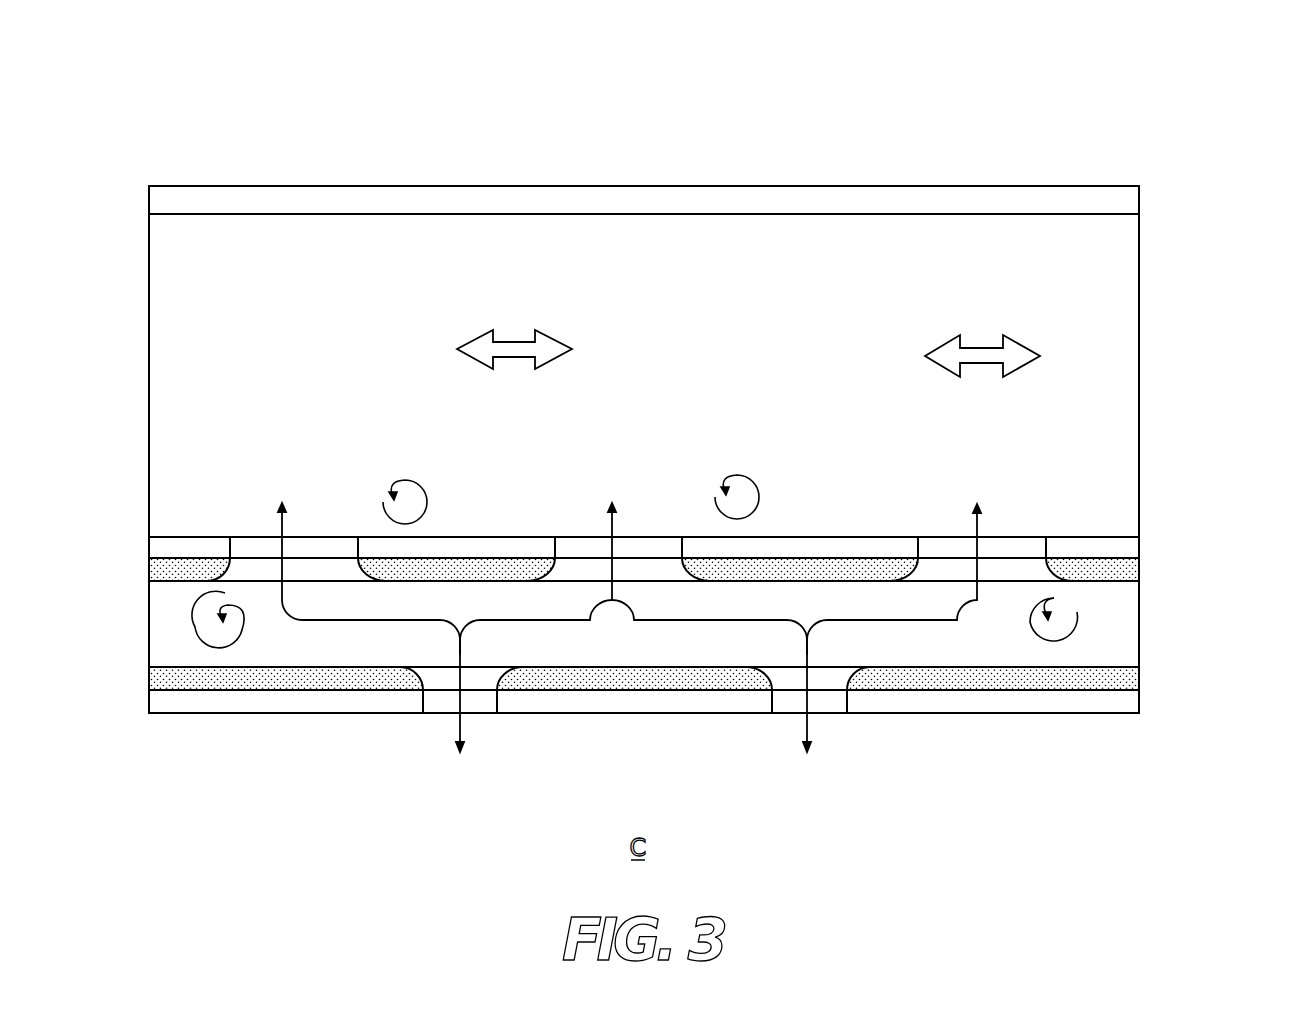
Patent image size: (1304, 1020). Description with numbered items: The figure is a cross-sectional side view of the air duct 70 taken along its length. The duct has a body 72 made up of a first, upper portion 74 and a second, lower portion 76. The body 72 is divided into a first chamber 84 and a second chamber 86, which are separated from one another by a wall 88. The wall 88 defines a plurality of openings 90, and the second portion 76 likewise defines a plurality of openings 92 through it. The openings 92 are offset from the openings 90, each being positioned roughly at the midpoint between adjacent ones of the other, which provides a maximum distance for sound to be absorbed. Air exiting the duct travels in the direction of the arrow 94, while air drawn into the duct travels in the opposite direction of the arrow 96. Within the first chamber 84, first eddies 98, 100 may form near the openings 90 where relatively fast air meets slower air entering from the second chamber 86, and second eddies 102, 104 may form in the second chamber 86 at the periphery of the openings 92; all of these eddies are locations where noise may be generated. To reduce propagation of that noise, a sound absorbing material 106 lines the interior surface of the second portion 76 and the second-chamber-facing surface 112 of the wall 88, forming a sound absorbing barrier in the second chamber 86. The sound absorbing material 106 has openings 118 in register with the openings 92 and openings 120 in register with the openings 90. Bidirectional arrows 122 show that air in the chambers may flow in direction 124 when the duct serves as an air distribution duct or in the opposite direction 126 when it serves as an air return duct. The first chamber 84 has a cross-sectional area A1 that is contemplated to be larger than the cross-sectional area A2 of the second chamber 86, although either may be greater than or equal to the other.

The air duct 70 is at (1200, 124).
The body 72 is at (604, 186).
The first portion 74 is at (777, 207).
The second portion 76 is at (933, 712).
The first chamber 84 is at (168, 400).
The second chamber 86 is at (165, 625).
The wall 88 is at (487, 547).
The openings 90 is at (326, 545).
The openings 92 is at (480, 712).
The arrow 94 is at (457, 735).
The arrow 96 is at (282, 528).
The first eddy 98 is at (716, 485).
The first eddy 100 is at (384, 490).
The second eddy 102 is at (1077, 612).
The second eddy 104 is at (240, 612).
The sound absorbing material 106 is at (1138, 568).
The second-chamber-facing surface 112 is at (795, 547).
The openings 118 is at (478, 677).
The openings 120 is at (329, 569).
The arrows 122 is at (510, 358).
The direction 124 is at (558, 336).
The direction 126 is at (482, 340).
The cross-sectional area A1 is at (1127, 380).
The cross-sectional area A2 is at (160, 650).